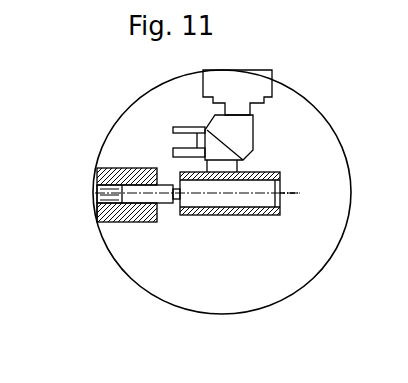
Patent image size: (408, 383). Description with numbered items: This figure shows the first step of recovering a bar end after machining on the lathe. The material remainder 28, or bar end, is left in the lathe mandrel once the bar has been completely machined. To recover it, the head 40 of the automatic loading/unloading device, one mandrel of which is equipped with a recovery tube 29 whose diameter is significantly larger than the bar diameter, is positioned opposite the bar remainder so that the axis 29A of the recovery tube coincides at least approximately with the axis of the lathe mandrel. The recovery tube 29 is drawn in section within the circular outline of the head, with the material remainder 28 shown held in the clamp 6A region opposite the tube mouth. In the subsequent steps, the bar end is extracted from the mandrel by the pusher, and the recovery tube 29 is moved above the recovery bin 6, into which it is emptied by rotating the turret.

The head 40 is at (322, 82).
The recovery tube 29 is at (222, 217).
The axis of recovery tube 29A is at (324, 257).
The clamp block 6A is at (96, 222).
The material remainder 28 is at (197, 255).
The recovery bin 6 is at (80, 305).